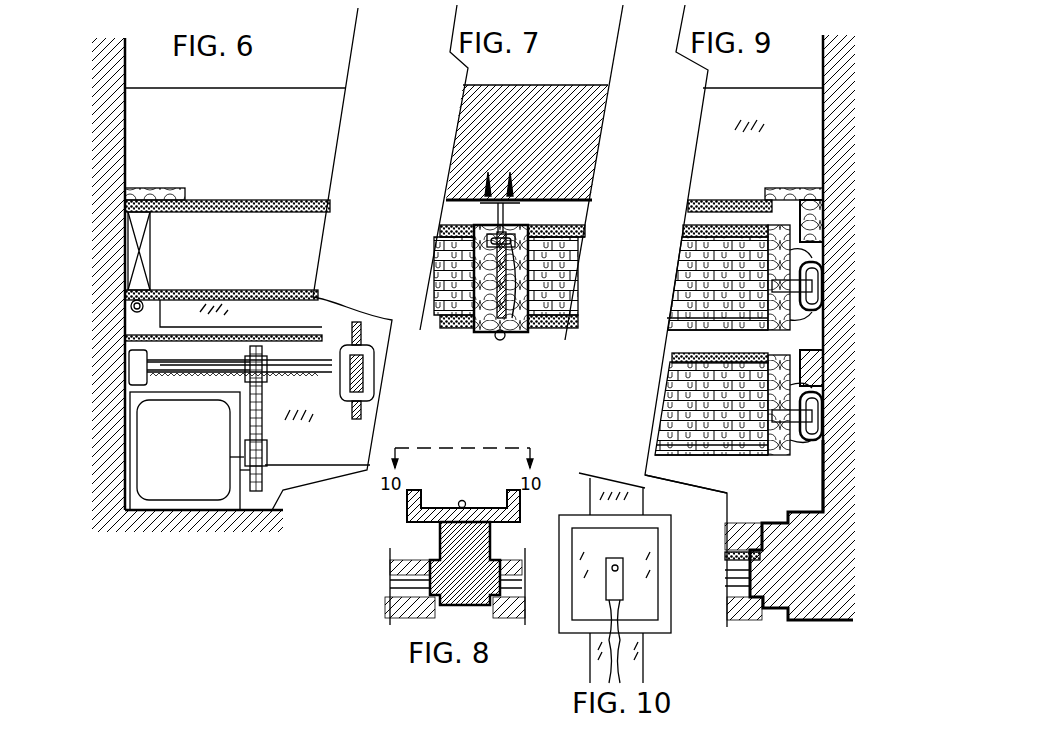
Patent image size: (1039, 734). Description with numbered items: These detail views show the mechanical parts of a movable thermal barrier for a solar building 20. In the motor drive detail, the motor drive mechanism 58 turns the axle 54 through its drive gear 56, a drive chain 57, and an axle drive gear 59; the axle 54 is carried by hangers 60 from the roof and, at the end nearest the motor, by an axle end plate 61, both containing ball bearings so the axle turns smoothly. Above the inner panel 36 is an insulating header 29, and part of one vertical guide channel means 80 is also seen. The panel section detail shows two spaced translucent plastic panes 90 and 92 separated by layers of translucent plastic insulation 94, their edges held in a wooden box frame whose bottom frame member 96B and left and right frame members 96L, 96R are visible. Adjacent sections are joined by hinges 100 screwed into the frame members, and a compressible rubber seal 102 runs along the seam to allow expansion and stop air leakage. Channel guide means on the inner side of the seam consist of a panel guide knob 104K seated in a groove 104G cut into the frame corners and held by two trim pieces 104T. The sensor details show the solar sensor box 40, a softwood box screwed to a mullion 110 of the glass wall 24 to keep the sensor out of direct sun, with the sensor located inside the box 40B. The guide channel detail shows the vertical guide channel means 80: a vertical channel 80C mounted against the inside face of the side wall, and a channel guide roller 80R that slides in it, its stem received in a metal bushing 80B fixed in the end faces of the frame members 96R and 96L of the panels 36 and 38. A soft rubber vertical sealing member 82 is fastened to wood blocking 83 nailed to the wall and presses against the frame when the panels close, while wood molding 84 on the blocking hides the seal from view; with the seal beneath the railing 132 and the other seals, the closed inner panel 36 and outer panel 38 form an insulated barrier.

In FIG. 6, the building 20 is at (108, 490).
In FIG. 9, the building 20 is at (838, 428).
In FIG. 8, the building 20 is at (385, 600).
In FIG. 9, the glass wall 24 is at (733, 577).
In FIG. 8, the glass wall 24 is at (388, 575).
In FIG. 6, the insulating header 29 is at (182, 244).
In FIG. 6, the inner panel 36 is at (177, 315).
In FIG. 7, the inner panel 36 is at (518, 297).
In FIG. 6, the outer panel 38 is at (340, 450).
In FIG. 9, the outer panel 38 is at (652, 410).
In FIG. 8, the solar sensor box 40 is at (447, 500).
In FIG. 10, the solar sensor box 40 is at (625, 552).
In FIG. 8, the solar sensor box 40B is at (405, 512).
In FIG. 10, the solar sensor box 40B is at (665, 538).
In FIG. 6, the axle 54 is at (165, 368).
In FIG. 6, the drive gear 56 is at (238, 459).
In FIG. 6, the drive chain 57 is at (246, 412).
In FIG. 6, the motor drive mechanism 58 is at (151, 445).
In FIG. 6, the axle drive gear 59 is at (240, 366).
In FIG. 6, the hangers 60 is at (340, 353).
In FIG. 6, the axle end plate 61 is at (137, 368).
In FIG. 6, the vertical guide channel means 80 is at (131, 306).
In FIG. 9, the metal bushing 80B is at (805, 258).
In FIG. 9, the vertical channel 80C is at (827, 287).
In FIG. 9, the channel guide roller 80R is at (812, 286).
In FIG. 9, the vertical sealing member 82 is at (812, 215).
In FIG. 9, the wood blocking 83 is at (812, 232).
In FIG. 6, the wood molding 84 is at (150, 197).
In FIG. 9, the wood molding 84 is at (797, 197).
In FIG. 7, the translucent plastic pane 90 is at (443, 230).
In FIG. 7, the translucent plastic pane 92 is at (420, 313).
In FIG. 7, the translucent plastic insulation 94 is at (453, 265).
In FIG. 7, the bottom frame member 96B is at (427, 228).
In FIG. 9, the bottom frame member 96B is at (680, 326).
In FIG. 7, the left frame member 96L is at (560, 273).
In FIG. 7, the right frame member 96R is at (482, 283).
In FIG. 9, the right frame member 96R is at (780, 312).
In FIG. 7, the hinges 100 is at (515, 340).
In FIG. 7, the compressible rubber seal 102 is at (500, 302).
In FIG. 7, the groove 104G is at (515, 190).
In FIG. 7, the panel guide knob 104K is at (468, 218).
In FIG. 7, the trim pieces 104T is at (486, 216).
In FIG. 6, the mullion 110 is at (132, 504).
In FIG. 6, the railing 132 is at (160, 135).
In FIG. 7, the railing 132 is at (497, 113).
In FIG. 9, the railing 132 is at (790, 128).